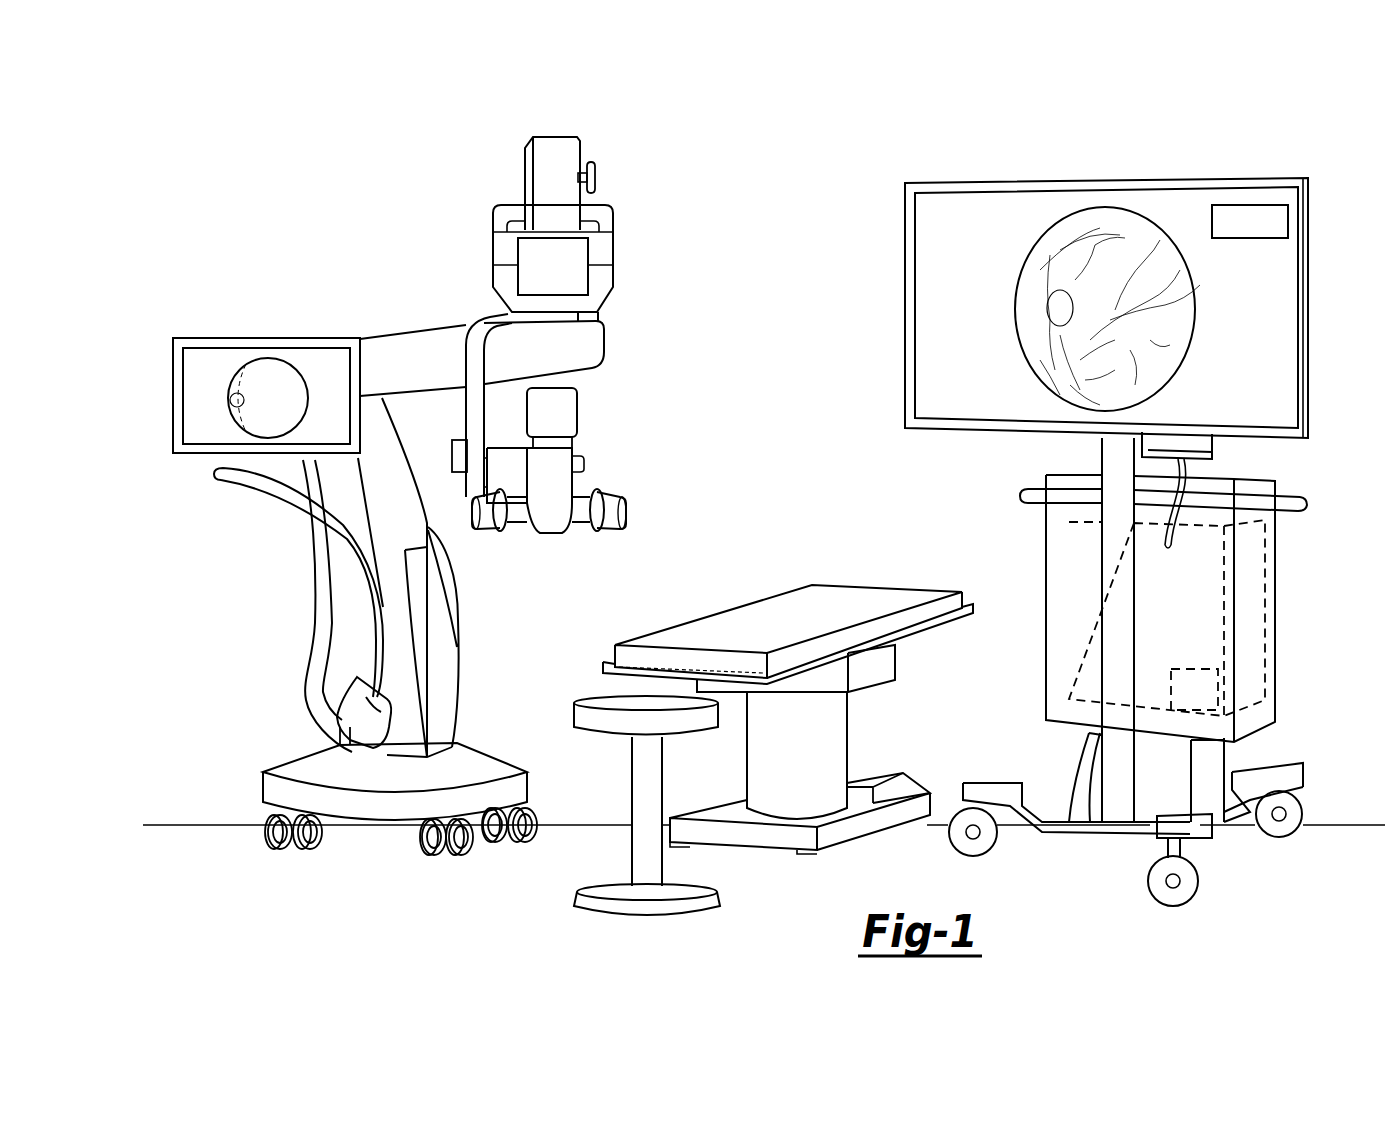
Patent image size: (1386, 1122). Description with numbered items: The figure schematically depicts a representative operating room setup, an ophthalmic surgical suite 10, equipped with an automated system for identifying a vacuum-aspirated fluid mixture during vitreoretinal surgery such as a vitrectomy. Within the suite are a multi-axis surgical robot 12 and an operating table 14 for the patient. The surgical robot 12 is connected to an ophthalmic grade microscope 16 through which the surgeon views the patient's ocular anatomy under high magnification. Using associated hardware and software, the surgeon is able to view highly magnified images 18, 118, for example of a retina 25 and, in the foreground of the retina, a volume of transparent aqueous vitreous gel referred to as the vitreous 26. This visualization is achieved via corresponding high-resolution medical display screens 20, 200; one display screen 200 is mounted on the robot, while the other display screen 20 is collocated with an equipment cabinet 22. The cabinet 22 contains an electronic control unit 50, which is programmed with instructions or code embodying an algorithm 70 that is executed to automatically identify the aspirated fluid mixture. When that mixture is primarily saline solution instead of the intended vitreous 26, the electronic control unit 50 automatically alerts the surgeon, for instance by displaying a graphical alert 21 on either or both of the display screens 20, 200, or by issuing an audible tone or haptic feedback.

The ophthalmic surgical suite 10 is at (432, 108).
The multi-axis surgical robot 12 is at (327, 292).
The operating table 14 is at (742, 627).
The ophthalmic grade microscope 16 is at (638, 424).
The highly magnified image 18 is at (1062, 222).
The high-resolution medical display screen 20 is at (1282, 130).
The graphical alert 21 is at (1289, 228).
The equipment cabinet 22 is at (1273, 578).
The retina 25 is at (232, 398).
The vitreous 26 is at (262, 370).
The electronic control unit 50 is at (1252, 657).
The algorithm 70 is at (1194, 689).
The highly magnified image 118 is at (233, 426).
The high-resolution medical display screen 200 is at (183, 300).